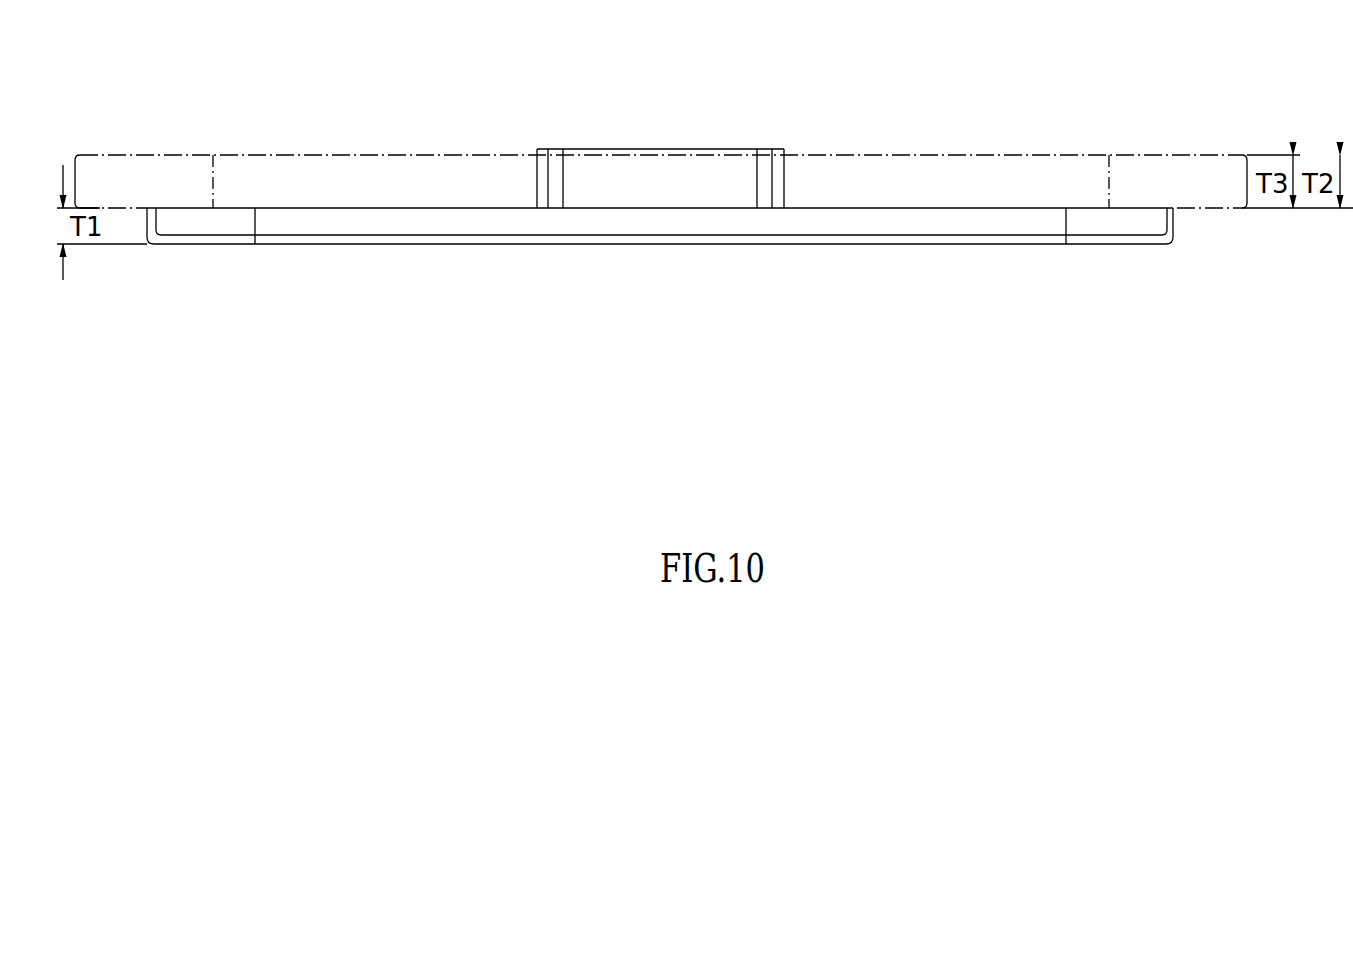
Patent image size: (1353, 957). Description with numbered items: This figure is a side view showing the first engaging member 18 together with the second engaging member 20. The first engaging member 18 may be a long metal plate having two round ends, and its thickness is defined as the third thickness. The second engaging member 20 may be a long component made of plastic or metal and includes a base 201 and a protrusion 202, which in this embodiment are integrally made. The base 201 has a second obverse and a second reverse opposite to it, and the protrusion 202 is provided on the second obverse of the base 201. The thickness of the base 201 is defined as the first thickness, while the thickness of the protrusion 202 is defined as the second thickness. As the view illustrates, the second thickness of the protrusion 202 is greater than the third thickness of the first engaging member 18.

The first engaging member 18 is at (240, 155).
The second engaging member 20 is at (660, 303).
The base 201 is at (928, 222).
The protrusion 202 is at (600, 149).